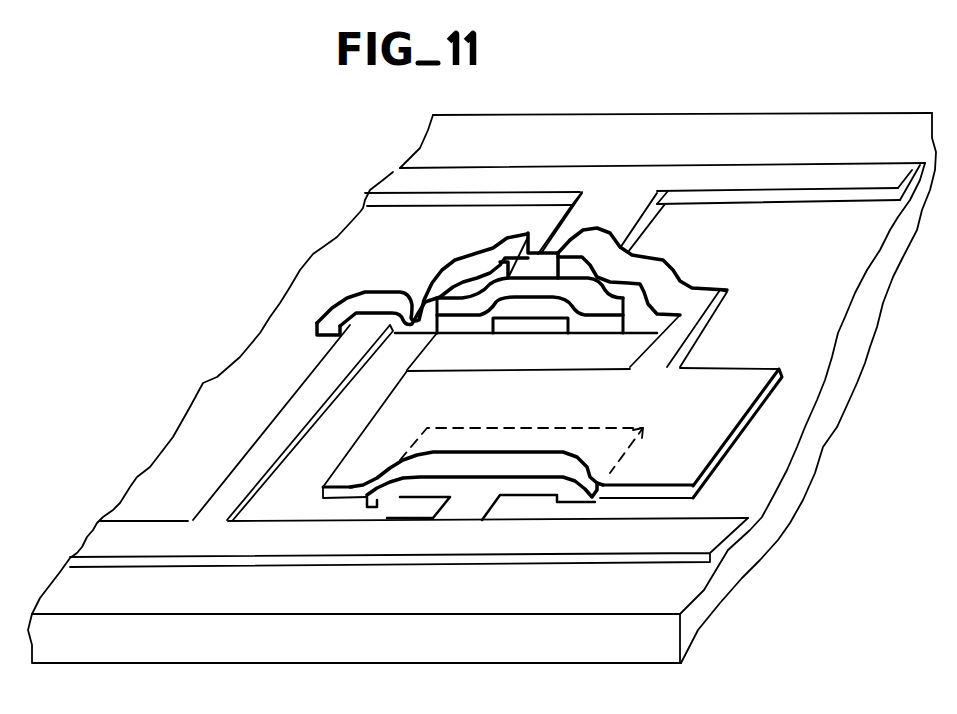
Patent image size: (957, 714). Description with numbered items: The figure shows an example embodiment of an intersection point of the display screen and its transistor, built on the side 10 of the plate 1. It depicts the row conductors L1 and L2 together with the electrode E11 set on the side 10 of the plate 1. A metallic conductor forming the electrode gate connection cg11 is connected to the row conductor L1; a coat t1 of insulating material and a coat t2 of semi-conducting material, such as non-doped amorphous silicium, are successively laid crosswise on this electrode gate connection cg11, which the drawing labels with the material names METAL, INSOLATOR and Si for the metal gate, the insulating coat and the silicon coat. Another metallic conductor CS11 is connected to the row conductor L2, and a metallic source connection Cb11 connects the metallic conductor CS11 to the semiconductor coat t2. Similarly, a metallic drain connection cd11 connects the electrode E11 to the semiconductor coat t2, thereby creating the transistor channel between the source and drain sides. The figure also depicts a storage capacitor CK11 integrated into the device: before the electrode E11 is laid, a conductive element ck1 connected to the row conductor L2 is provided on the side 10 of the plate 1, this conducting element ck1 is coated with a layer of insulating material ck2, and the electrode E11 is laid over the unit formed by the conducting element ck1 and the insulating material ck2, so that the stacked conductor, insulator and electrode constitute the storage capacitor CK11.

The plate 1 is at (803, 470).
The side of the plate 10 is at (814, 358).
The row conductor L1 is at (738, 177).
The row conductor L2 is at (533, 540).
The electrode gate connection cg11 is at (647, 213).
The source connection Cb11 is at (382, 300).
The drain connection cd11 is at (717, 317).
The metallic conductor CS11 is at (305, 410).
The electrode E11 is at (723, 418).
The storage capacitor CK11 is at (593, 504).
The conductive element ck1 is at (427, 500).
The layer of insulating material ck2 is at (377, 505).
The coat of insulating material t1 is at (450, 326).
The coat of semi-conducting material t2 is at (588, 313).
The silicon layer Si is at (530, 296).
The insulator layer INSOLATOR is at (526, 315).
The metal layer METAL is at (540, 326).